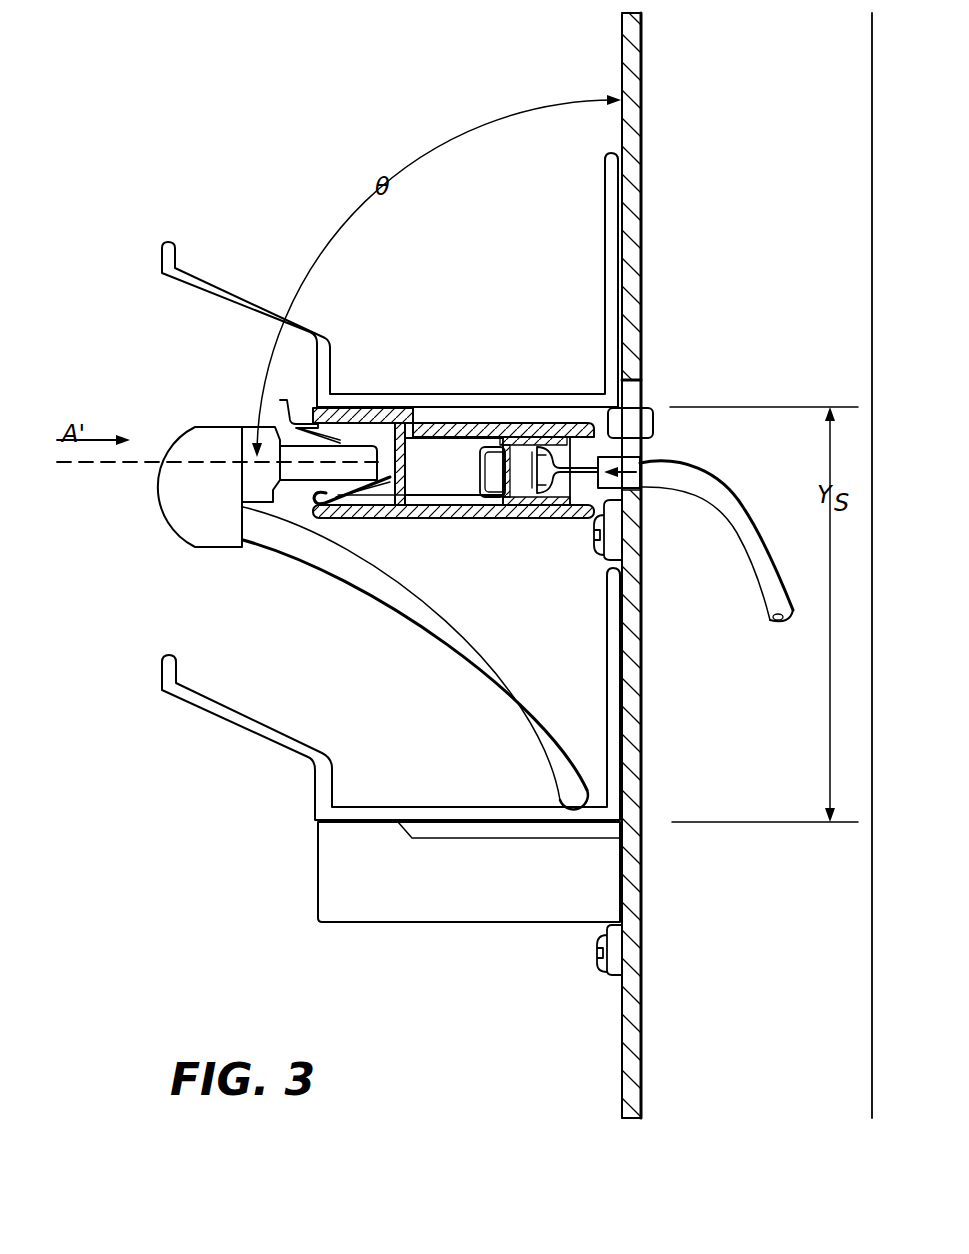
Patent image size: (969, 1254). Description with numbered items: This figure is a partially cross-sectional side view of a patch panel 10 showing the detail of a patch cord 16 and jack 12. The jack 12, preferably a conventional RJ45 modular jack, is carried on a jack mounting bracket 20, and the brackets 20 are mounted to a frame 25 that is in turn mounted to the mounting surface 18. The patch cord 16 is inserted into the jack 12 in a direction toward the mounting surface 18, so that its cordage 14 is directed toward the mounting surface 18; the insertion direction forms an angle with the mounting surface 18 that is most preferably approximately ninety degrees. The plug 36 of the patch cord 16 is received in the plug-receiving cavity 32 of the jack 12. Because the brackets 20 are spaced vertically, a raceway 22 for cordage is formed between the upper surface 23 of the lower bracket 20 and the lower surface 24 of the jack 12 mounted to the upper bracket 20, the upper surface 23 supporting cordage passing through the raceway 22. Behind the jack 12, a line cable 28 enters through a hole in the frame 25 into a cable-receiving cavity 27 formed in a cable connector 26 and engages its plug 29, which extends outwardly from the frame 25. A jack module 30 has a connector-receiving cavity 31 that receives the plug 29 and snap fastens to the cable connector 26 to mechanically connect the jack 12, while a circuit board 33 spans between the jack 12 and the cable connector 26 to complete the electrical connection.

The patch panel 10 is at (222, 58).
The jack 12 is at (284, 398).
The cordage 14 is at (408, 590).
The patch cord 16 is at (210, 400).
The mounting surface 18 is at (870, 190).
The jack mounting bracket 20 is at (535, 393).
The raceway 22 is at (343, 703).
The upper surface 23 is at (437, 807).
The lower surface 24 is at (460, 520).
The frame 25 is at (643, 58).
The cable connector 26 is at (598, 440).
The cable-receiving cavity 27 is at (648, 462).
The cable 28 is at (735, 513).
The plug 29 is at (560, 502).
The jack module 30 is at (503, 440).
The connector-receiving cavity 31 is at (520, 500).
The plug-receiving cavity 32 is at (355, 415).
The circuit board 33 is at (395, 520).
The plug 36 is at (298, 472).